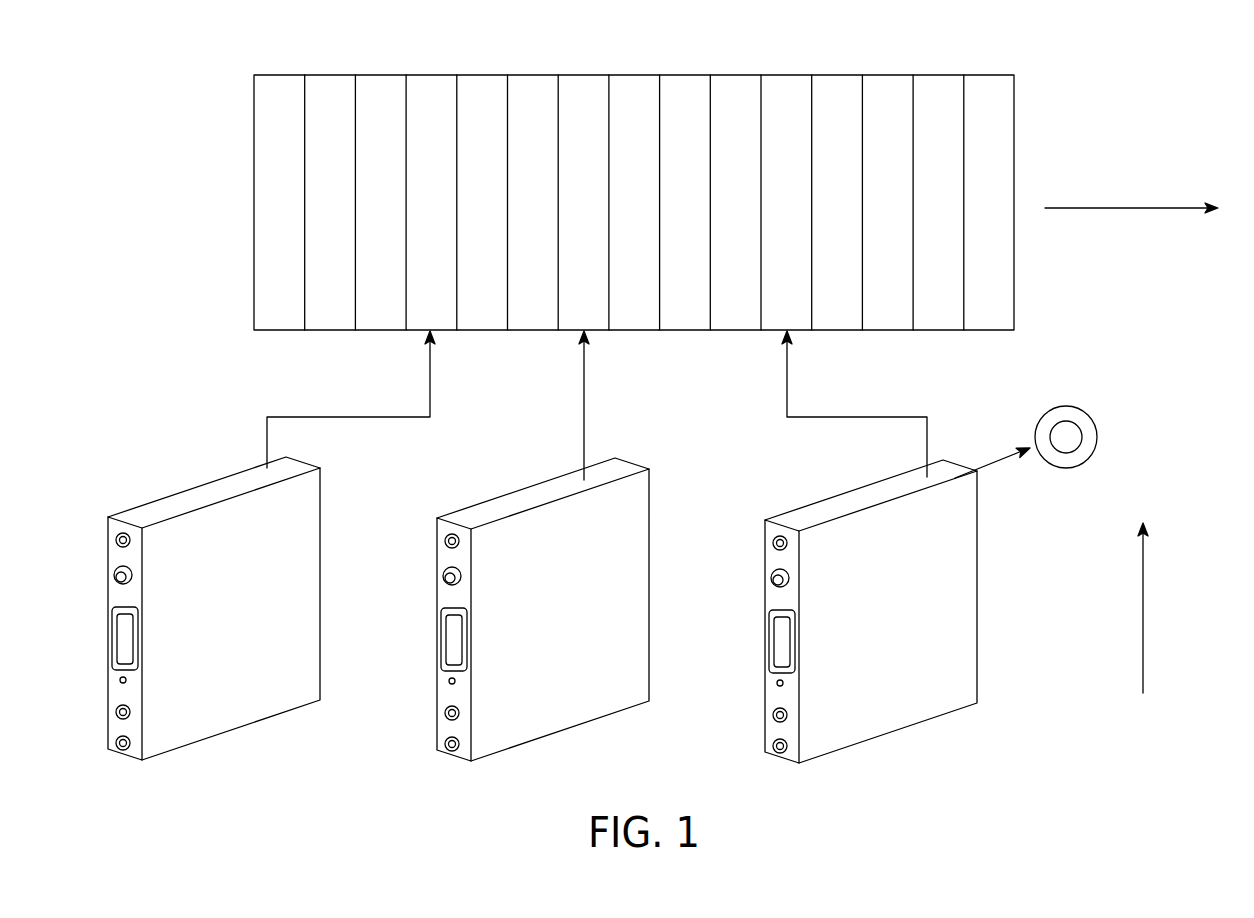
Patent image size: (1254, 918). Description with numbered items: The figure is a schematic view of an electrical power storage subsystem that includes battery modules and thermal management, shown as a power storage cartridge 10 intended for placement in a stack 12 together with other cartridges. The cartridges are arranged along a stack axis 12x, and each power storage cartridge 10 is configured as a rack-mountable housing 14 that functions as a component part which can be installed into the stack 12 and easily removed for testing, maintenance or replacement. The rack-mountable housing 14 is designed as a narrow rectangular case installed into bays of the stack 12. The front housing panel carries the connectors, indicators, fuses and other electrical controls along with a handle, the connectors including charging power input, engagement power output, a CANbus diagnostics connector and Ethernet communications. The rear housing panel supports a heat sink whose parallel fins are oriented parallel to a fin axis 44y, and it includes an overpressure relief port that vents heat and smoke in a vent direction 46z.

The power storage cartridge 10 is at (136, 462).
The stack 12 is at (254, 248).
The rack-mountable housing 14 is at (812, 502).
The stack axis 12x is at (1113, 212).
The vent direction 46z is at (1097, 450).
The fin axis 44y is at (1140, 614).